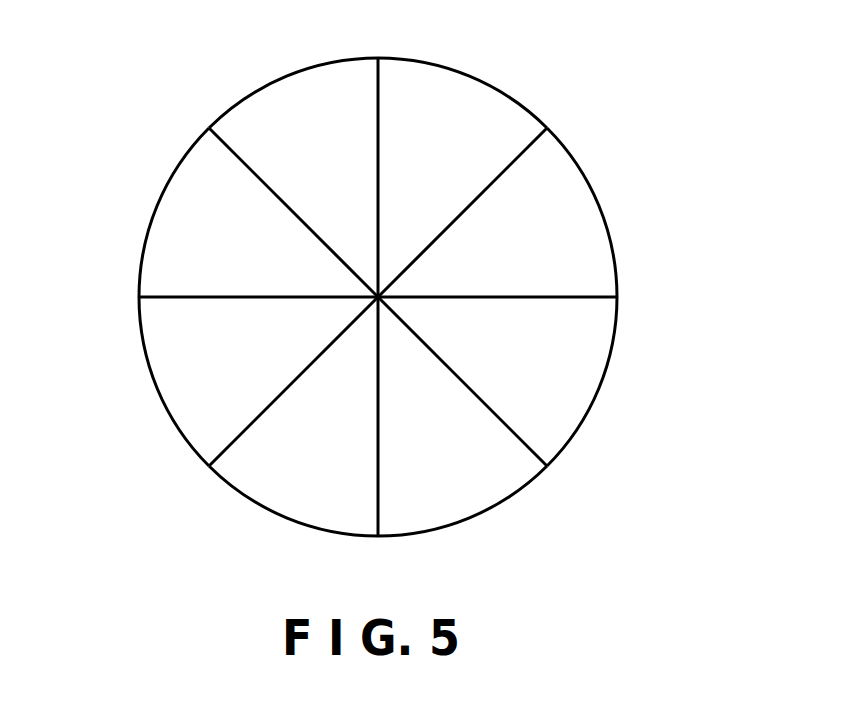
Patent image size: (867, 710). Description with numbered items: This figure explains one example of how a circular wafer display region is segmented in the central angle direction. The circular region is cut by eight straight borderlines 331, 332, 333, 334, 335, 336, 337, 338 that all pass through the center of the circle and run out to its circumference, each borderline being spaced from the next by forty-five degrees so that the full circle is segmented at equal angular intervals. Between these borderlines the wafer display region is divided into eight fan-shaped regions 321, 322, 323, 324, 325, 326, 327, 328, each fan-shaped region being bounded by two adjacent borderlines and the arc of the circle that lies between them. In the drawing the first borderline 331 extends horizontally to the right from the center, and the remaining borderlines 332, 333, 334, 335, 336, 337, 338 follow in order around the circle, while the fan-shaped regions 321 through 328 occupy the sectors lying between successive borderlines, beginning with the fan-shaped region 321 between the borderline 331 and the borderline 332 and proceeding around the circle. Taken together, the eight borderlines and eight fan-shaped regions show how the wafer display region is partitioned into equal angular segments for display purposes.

The fan-shaped region 321 is at (583, 218).
The fan-shaped region 322 is at (465, 107).
The fan-shaped region 323 is at (300, 95).
The fan-shaped region 324 is at (185, 202).
The fan-shaped region 325 is at (178, 383).
The fan-shaped region 326 is at (285, 490).
The fan-shaped region 327 is at (467, 497).
The fan-shaped region 328 is at (573, 382).
The borderline 331 is at (588, 297).
The borderline 332 is at (523, 153).
The borderline 333 is at (378, 87).
The borderline 334 is at (222, 143).
The borderline 335 is at (175, 297).
The borderline 336 is at (223, 447).
The borderline 337 is at (377, 510).
The borderline 338 is at (528, 450).